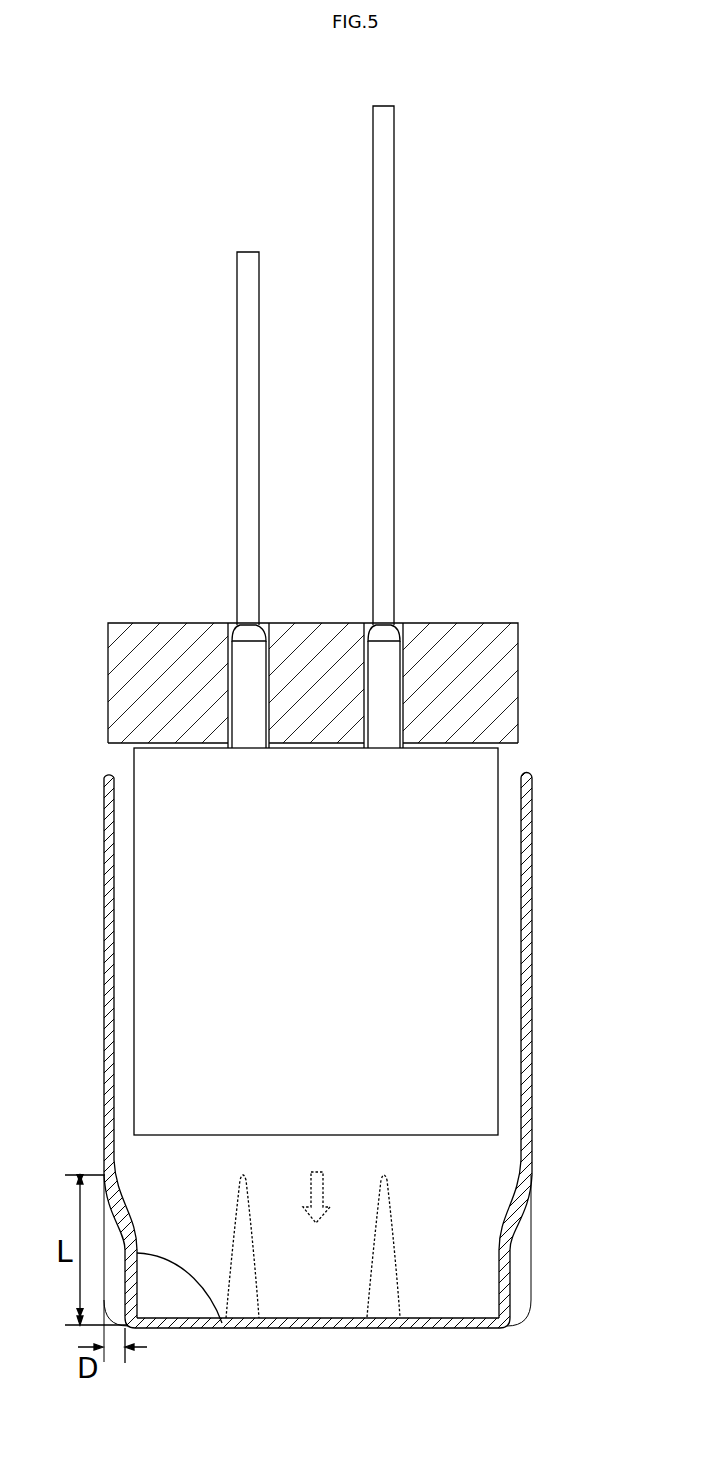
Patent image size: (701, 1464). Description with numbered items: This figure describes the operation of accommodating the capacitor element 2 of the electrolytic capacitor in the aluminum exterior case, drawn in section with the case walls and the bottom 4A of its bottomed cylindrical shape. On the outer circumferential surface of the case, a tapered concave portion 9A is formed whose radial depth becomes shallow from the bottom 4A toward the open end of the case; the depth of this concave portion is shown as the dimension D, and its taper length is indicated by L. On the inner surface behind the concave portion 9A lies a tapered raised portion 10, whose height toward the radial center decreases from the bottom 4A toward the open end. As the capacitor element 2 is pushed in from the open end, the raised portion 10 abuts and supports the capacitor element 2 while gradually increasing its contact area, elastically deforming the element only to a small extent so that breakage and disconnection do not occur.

The capacitor element 2 is at (498, 970).
The tapered concave portion 9A is at (531, 1273).
The bottom 4A is at (432, 1328).
The raised portion 10 is at (377, 1294).